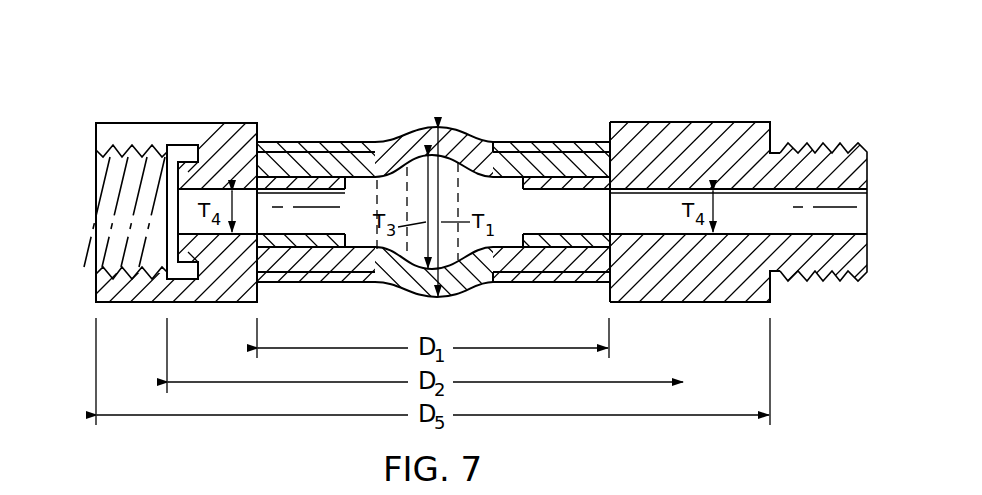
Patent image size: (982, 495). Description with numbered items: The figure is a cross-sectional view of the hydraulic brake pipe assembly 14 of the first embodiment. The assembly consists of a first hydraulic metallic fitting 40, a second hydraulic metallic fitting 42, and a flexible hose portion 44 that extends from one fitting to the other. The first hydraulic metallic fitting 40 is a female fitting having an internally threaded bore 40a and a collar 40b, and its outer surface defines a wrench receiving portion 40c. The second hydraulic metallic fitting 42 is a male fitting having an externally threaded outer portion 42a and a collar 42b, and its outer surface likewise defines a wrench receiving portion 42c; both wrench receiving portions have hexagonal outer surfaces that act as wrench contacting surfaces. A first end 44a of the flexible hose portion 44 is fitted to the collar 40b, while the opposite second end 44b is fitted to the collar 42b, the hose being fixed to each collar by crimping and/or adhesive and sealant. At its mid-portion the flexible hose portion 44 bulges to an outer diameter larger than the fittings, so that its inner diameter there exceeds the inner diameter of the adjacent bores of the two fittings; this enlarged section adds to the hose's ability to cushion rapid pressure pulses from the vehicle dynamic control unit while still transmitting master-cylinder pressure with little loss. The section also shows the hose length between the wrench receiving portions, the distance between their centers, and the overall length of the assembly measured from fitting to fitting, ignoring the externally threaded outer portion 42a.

The hydraulic brake pipe assembly 14 is at (600, 60).
The first hydraulic metallic fitting 40 is at (228, 150).
The internally threaded bore 40a is at (130, 157).
The collar 40b is at (316, 150).
The wrench receiving portion 40c is at (142, 123).
The second hydraulic metallic fitting 42 is at (650, 150).
The externally threaded outer portion 42a is at (813, 145).
The collar 42b is at (537, 143).
The wrench receiving portion 42c is at (727, 122).
The flexible hose portion 44 is at (416, 137).
The first end 44a is at (282, 163).
The second end 44b is at (590, 160).